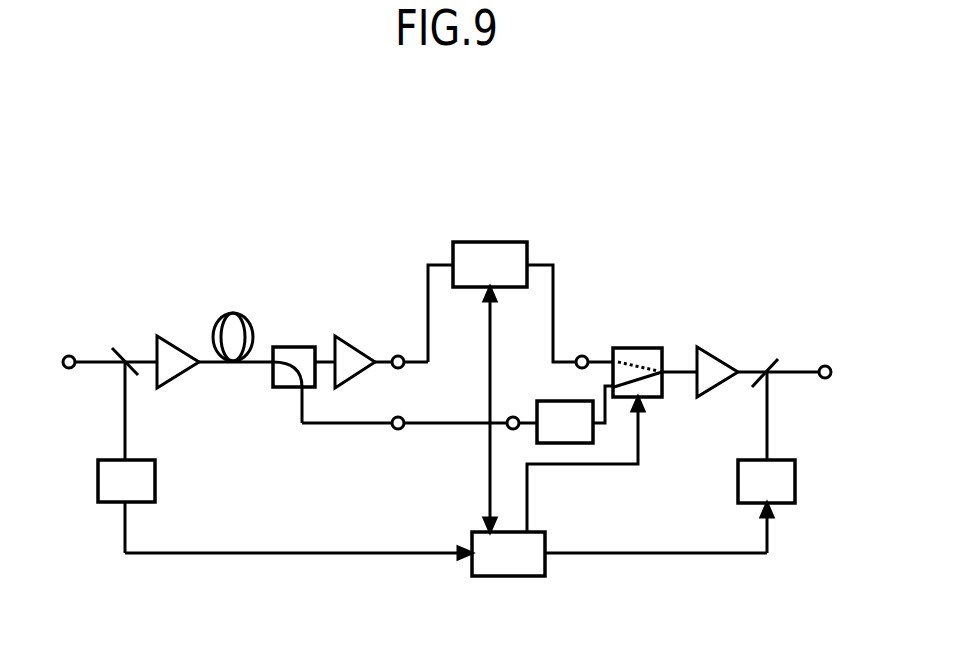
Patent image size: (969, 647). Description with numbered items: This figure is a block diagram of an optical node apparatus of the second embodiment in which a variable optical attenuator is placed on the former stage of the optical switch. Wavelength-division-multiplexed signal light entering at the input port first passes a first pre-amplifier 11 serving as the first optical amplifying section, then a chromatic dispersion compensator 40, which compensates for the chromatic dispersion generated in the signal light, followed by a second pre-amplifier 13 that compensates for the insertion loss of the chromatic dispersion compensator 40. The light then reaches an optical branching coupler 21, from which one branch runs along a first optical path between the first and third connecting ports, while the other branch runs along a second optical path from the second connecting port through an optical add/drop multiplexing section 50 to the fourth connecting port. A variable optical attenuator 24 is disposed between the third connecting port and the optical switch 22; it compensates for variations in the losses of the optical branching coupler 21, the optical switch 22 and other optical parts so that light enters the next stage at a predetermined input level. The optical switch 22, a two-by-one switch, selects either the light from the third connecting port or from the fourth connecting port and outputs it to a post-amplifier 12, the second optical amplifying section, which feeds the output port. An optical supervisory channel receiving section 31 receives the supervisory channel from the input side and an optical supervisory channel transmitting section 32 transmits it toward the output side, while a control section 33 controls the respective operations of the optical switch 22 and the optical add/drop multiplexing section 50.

The pre-amplifier (PRE1) 11 is at (174, 342).
The chromatic dispersion compensator 40 is at (230, 312).
The optical branching coupler (CPL) 21 is at (288, 388).
The pre-amplifier (PRE2) 13 is at (352, 343).
The OADM section 50 is at (477, 242).
The variable optical attenuator 24 is at (557, 400).
The optical switch (SW) 22 is at (651, 398).
The post-amplifier (POST) 12 is at (713, 352).
The OSC receiving section 31 is at (115, 460).
The OSC transmitting section 32 is at (782, 460).
The control section (CONT) 33 is at (508, 577).